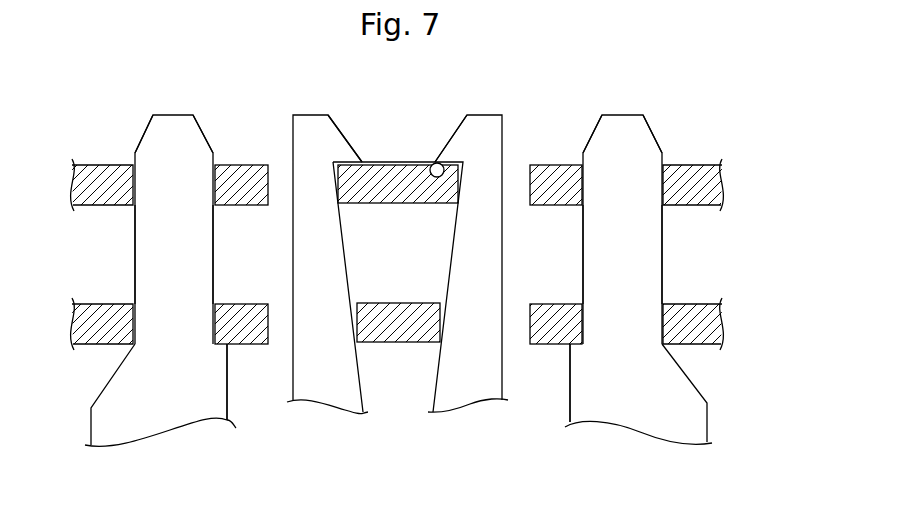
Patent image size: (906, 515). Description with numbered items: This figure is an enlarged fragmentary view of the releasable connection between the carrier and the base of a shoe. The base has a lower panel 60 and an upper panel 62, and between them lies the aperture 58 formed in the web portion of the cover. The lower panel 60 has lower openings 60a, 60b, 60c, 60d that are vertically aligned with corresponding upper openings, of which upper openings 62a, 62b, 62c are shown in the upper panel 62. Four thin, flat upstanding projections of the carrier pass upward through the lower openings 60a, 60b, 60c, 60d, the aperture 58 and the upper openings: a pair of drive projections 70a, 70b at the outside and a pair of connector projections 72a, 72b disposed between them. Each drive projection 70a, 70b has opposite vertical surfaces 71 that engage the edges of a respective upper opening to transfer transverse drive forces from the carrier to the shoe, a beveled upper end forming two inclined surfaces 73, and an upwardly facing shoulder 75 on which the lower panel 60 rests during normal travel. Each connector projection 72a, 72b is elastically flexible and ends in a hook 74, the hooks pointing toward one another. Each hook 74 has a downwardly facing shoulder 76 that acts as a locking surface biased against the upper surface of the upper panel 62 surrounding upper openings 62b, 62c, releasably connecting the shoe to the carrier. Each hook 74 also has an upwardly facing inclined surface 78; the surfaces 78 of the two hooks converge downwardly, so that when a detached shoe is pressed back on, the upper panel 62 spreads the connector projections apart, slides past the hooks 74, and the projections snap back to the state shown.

The aperture 58 is at (105, 256).
The lower panel 60 is at (700, 320).
The lower opening 60a is at (132, 318).
The lower opening 60b is at (281, 320).
The lower opening 60c is at (518, 320).
The lower opening 60d is at (677, 307).
The upper panel 62 is at (700, 183).
The upper opening 62a is at (132, 173).
The upper opening 62b is at (282, 180).
The upper opening 62c is at (520, 180).
The drive projection 70a is at (177, 132).
The drive projection 70b is at (625, 130).
The vertical surface 71 is at (133, 230).
The connector projection 72a is at (312, 132).
The connector projection 72b is at (485, 132).
The beveled surface 73 is at (141, 130).
The hook 74 is at (447, 145).
The upwardly facing shoulder 75 is at (222, 345).
The downwardly facing shoulder 76 is at (432, 165).
The inclined surface 78 is at (342, 127).